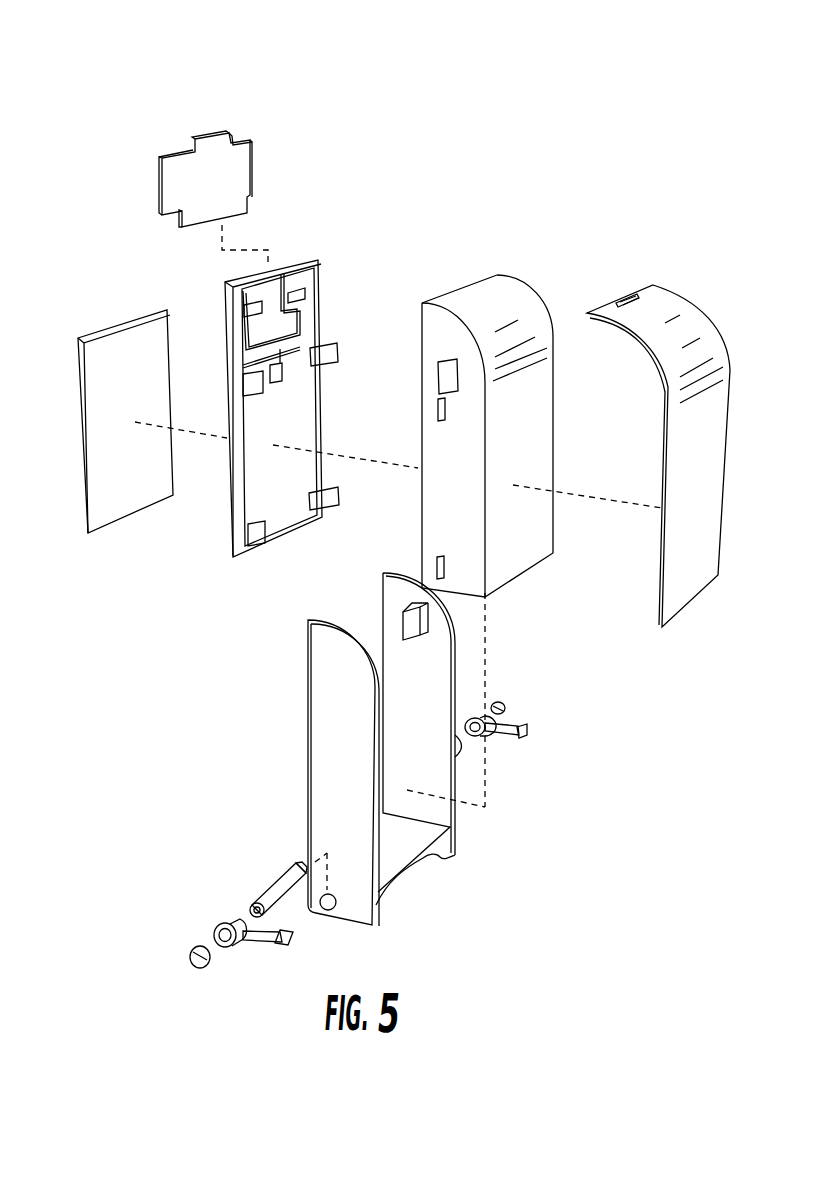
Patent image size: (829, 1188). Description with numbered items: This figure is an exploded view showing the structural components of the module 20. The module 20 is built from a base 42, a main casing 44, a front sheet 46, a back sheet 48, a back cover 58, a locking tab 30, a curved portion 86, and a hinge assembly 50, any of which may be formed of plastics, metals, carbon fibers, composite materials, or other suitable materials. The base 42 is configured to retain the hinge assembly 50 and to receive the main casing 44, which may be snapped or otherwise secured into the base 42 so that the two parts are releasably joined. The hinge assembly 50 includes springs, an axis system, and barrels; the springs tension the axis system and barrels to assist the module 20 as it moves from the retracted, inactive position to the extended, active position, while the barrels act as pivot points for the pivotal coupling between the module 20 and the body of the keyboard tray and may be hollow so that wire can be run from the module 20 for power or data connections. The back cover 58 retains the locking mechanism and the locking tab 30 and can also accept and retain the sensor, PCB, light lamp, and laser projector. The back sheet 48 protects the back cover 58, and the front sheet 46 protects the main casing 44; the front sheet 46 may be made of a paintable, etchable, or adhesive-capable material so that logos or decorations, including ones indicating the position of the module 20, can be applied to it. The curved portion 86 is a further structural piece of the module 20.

The module 20 is at (632, 68).
The locking tab 30 is at (220, 142).
The base 42 is at (325, 772).
The main casing 44 is at (527, 558).
The front sheet 46 is at (687, 328).
The back sheet 48 is at (108, 345).
The hinge assembly 50 is at (212, 890).
The back cover 58 is at (317, 284).
The curved portion 86 is at (413, 866).